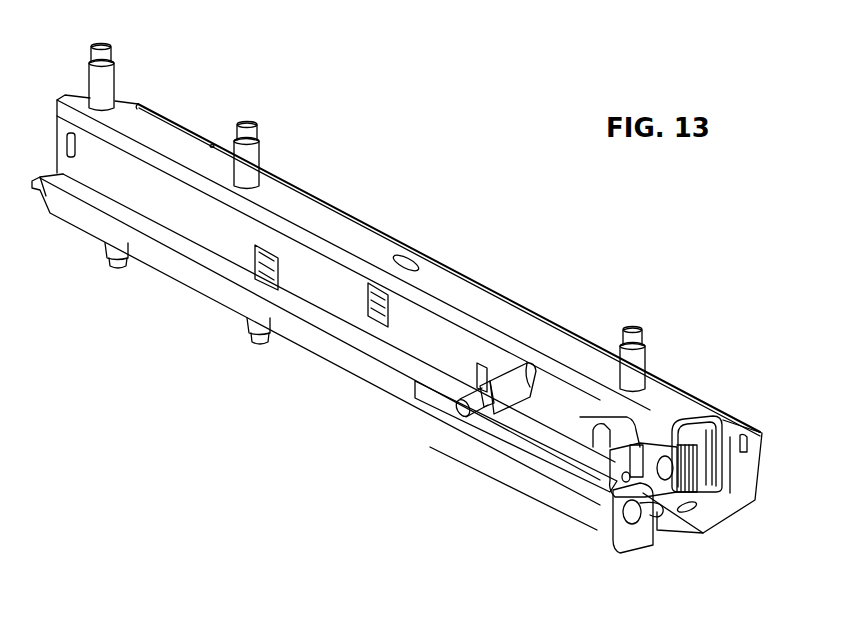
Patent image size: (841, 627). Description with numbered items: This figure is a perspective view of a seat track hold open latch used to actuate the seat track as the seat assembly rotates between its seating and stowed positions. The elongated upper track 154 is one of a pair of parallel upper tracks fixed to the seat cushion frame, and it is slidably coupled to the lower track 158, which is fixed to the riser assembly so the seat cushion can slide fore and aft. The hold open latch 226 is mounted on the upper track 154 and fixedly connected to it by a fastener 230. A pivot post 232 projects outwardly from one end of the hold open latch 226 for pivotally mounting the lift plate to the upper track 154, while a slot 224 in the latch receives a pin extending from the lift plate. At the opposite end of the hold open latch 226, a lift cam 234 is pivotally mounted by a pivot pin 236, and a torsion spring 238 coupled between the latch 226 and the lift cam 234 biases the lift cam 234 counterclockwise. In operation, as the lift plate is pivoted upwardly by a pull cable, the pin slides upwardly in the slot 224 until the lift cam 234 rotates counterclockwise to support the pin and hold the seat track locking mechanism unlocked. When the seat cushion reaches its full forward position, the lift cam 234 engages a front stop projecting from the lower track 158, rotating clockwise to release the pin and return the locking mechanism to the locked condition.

The upper track 154 is at (365, 241).
The lower track 158 is at (752, 463).
The slot 224 is at (650, 430).
The hold open latch 226 is at (565, 412).
The fastener 230 is at (600, 476).
The pivot post 232 is at (503, 380).
The lift cam 234 is at (628, 548).
The pivot pin 236 is at (624, 530).
The torsion spring 238 is at (700, 500).